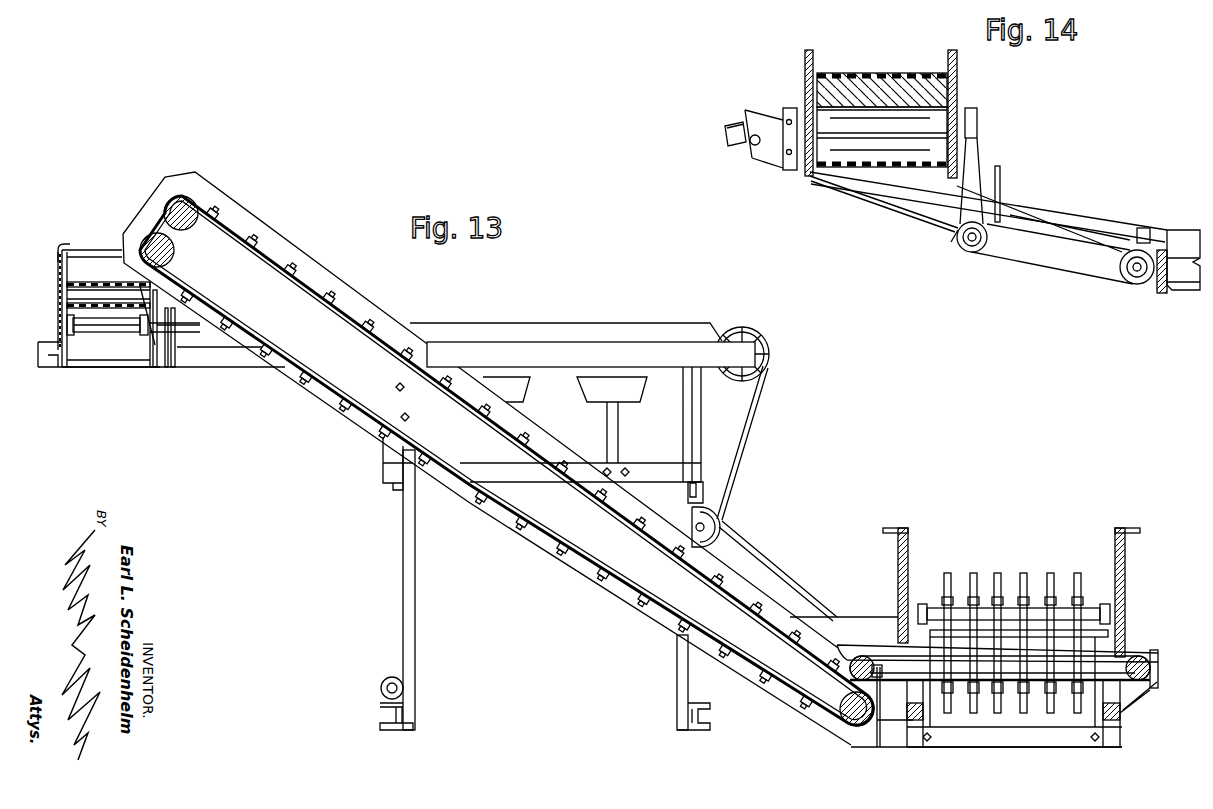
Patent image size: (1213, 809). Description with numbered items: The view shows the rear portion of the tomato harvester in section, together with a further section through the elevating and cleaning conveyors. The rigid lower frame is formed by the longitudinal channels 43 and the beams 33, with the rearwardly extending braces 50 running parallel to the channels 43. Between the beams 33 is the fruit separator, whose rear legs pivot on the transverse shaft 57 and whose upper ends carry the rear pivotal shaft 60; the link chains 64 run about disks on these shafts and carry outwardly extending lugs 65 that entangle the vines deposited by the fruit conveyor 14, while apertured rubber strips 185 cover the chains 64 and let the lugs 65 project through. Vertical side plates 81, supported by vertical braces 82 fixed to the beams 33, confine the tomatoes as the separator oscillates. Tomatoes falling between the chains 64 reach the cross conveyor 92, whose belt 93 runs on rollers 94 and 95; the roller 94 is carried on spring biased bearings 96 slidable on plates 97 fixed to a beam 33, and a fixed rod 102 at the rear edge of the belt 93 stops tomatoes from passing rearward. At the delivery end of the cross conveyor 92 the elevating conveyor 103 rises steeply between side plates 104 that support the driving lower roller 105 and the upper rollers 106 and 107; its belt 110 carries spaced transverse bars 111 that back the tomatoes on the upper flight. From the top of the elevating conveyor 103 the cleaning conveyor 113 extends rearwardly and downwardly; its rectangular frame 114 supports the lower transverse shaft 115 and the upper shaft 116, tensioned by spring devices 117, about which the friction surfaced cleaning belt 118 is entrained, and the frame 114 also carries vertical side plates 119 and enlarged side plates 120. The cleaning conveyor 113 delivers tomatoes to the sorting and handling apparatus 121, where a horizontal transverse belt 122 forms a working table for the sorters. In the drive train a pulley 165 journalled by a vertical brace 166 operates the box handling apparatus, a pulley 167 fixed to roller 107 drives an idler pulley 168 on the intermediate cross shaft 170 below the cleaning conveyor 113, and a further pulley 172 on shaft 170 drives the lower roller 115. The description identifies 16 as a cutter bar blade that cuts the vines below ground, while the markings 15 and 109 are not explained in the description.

In FIG. 13, the fruit conveyor 14 is at (190, 157).
In FIG. 13, the section line 15- 15 is at (40, 207).
In FIG. 13, the blade 16 is at (98, 213).
In FIG. 13, the beam 33 is at (915, 735).
In FIG. 13, the longitudinal channel 43 is at (394, 726).
In FIG. 13, the rearwardly extending brace 50 is at (382, 490).
In FIG. 13, the transverse shaft 57 is at (1010, 700).
In FIG. 13, the rear pivotal shaft 60 is at (1068, 610).
In FIG. 13, the link chain 64 is at (962, 590).
In FIG. 13, the lug 65 is at (1022, 580).
In FIG. 13, the vertical side plate 81 is at (892, 527).
In FIG. 13, the vertical brace 82 is at (897, 573).
In FIG. 13, the cross conveyor 92 is at (1150, 657).
In FIG. 13, the belt 93 is at (884, 680).
In FIG. 13, the roller 94 is at (1150, 690).
In FIG. 13, the roller 95 is at (851, 665).
In FIG. 13, the spring biased bearing 96 is at (887, 672).
In FIG. 13, the plate 97 is at (1158, 668).
In FIG. 13, the fixed rod 102 is at (880, 655).
In FIG. 13, the elevating conveyor 103 is at (627, 530).
In FIG. 14, the elevating conveyor 103 is at (962, 100).
In FIG. 13, the side plate 104 is at (487, 458).
In FIG. 14, the side plate 104 is at (804, 70).
In FIG. 13, the lower roller 105 is at (843, 704).
In FIG. 13, the upper roller 106 is at (192, 230).
In FIG. 14, the upper roller 106 is at (905, 75).
In FIG. 13, the upper roller 107 is at (170, 262).
In FIG. 14, the upper roller 107 is at (860, 136).
In FIG. 13, the support leg 109 is at (416, 634).
In FIG. 13, the conveyor belt 110 is at (232, 232).
In FIG. 14, the conveyor belt 110 is at (875, 74).
In FIG. 13, the transverse bar 111 is at (288, 268).
In FIG. 13, the cleaning conveyor 113 is at (60, 282).
In FIG. 14, the cleaning conveyor 113 is at (878, 205).
In FIG. 13, the rectangular frame 114 is at (60, 360).
In FIG. 14, the rectangular frame 114 is at (1009, 216).
In FIG. 14, the lower transverse shaft 115 is at (1137, 284).
In FIG. 14, the upper transverse shaft 116 is at (752, 150).
In FIG. 14, the spring device 117 is at (727, 145).
In FIG. 13, the cleaning belt 118 is at (120, 278).
In FIG. 14, the vertical side plate 119 is at (1070, 219).
In FIG. 13, the enlarged side plate 120 is at (64, 250).
In FIG. 13, the sorting and handling apparatus 121 is at (548, 326).
In FIG. 14, the sorting and handling apparatus 121 is at (1176, 230).
In FIG. 13, the horizontal transverse belt 122 is at (724, 330).
In FIG. 14, the horizontal transverse belt 122 is at (1178, 296).
In FIG. 13, the pulley 165 is at (722, 530).
In FIG. 13, the vertical brace 166 is at (677, 683).
In FIG. 14, the pulley 167 is at (980, 128).
In FIG. 13, the idler pulley 168 is at (156, 367).
In FIG. 13, the intermediate cross shaft 170 is at (105, 333).
In FIG. 14, the intermediate cross shaft 170 is at (968, 248).
In FIG. 13, the pulley 172 is at (175, 332).
In FIG. 14, the pulley 172 is at (955, 245).
In FIG. 13, the rubber strip 185 is at (1045, 600).